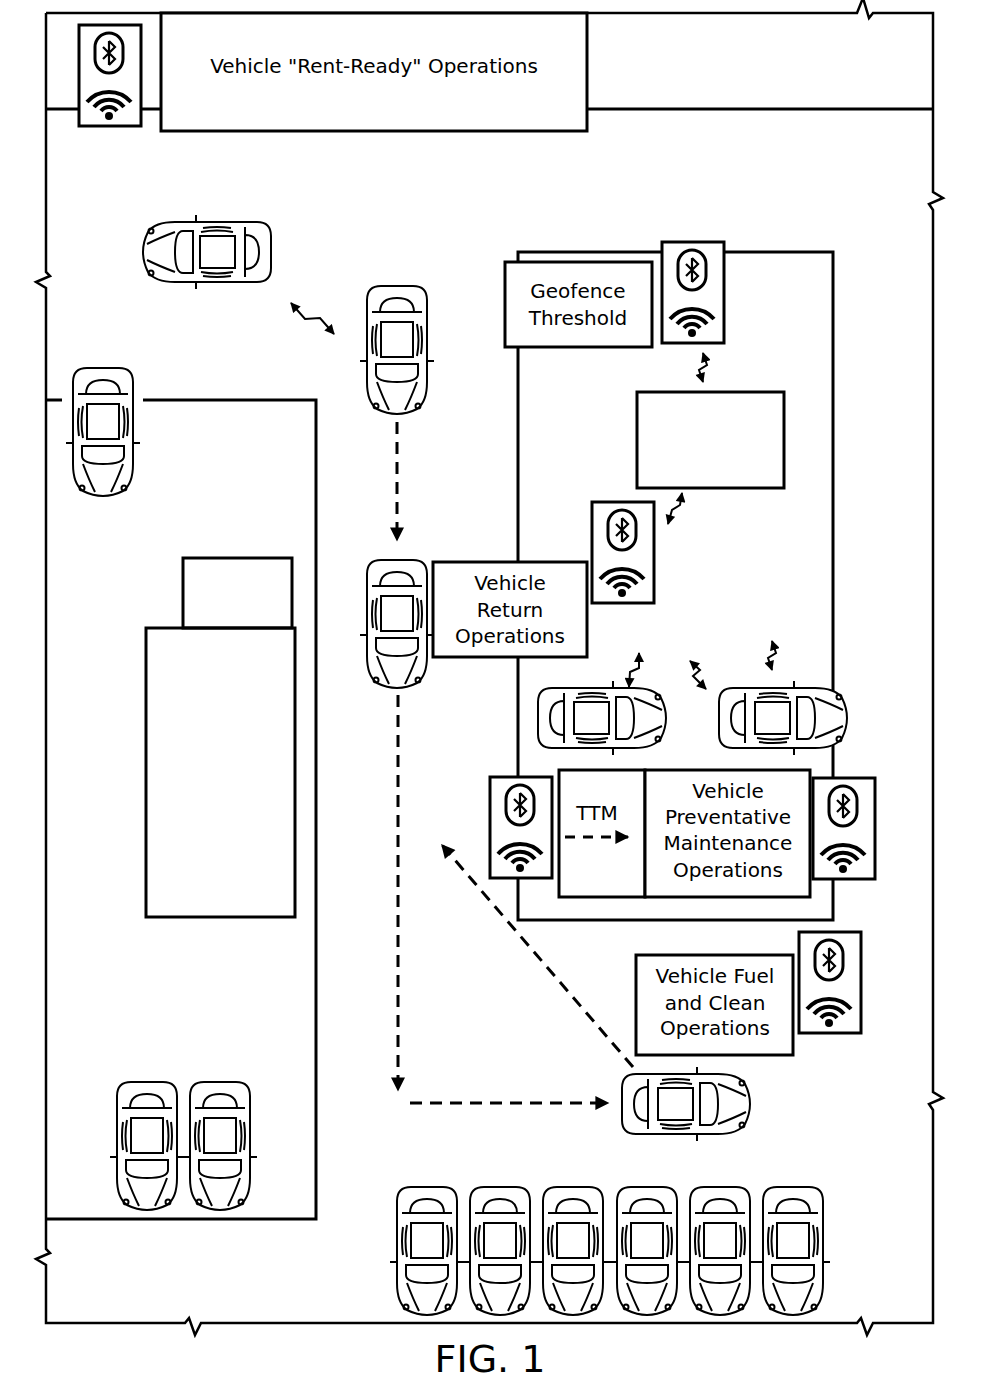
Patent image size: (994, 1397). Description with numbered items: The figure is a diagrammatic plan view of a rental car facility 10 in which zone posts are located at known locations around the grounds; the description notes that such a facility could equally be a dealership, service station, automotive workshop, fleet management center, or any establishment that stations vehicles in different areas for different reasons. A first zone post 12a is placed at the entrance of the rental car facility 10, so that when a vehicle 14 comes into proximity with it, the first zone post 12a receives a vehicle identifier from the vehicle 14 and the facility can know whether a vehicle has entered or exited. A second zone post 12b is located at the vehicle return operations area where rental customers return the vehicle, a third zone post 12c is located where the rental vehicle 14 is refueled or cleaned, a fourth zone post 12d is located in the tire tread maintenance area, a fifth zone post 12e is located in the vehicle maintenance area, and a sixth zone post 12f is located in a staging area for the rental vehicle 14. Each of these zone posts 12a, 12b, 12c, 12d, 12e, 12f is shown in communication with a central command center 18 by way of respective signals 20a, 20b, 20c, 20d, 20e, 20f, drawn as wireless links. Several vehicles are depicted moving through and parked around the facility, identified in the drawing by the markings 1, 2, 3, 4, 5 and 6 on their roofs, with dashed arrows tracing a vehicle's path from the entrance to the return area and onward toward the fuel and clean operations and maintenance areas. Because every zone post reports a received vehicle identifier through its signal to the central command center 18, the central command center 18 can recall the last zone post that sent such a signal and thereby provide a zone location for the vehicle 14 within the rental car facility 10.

The vehicle 1 is at (389, 353).
The vehicle 2 is at (389, 627).
The vehicle 3 is at (668, 1117).
The vehicle 4 is at (584, 731).
The vehicle 5 is at (765, 731).
The vehicle 6 is at (209, 265).
The rental car facility 10 is at (840, 438).
The first zone post 12a is at (725, 302).
The second zone post 12b is at (655, 583).
The third zone post 12c is at (863, 953).
The fourth zone post 12d is at (490, 818).
The fifth zone post 12e is at (897, 775).
The sixth zone post 12f is at (90, 128).
The vehicle 14 is at (423, 350).
The central command center 18 is at (710, 440).
The signal 20a is at (712, 370).
The signal 20b is at (678, 508).
The signal 20c is at (708, 674).
The signal 20d is at (632, 666).
The signal 20e is at (777, 655).
The signal 20f is at (303, 318).